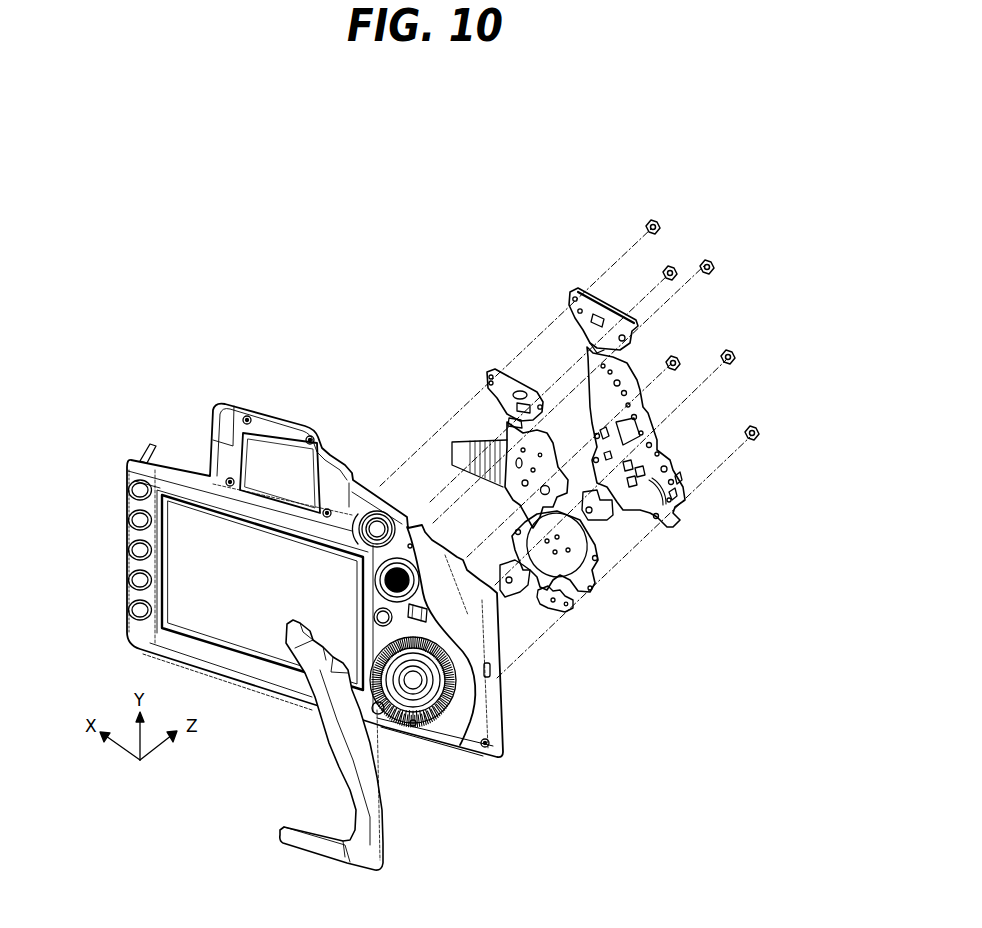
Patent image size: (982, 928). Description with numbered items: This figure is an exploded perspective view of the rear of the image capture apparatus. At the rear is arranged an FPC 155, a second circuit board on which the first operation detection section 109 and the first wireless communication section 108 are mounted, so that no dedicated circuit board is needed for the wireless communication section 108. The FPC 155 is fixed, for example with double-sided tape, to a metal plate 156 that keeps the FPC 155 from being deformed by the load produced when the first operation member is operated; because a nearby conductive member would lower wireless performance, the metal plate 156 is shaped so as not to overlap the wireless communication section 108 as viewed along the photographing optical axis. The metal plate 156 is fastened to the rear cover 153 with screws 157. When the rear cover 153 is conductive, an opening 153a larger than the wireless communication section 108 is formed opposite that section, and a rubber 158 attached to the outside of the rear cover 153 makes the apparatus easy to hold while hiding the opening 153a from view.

The first wireless communication section 108 is at (554, 608).
The first operation detection section 109 is at (582, 555).
The rear cover 153 is at (130, 458).
The opening 153a is at (427, 735).
The FPC 155 is at (496, 374).
The metal plate 156 is at (578, 291).
The screws 157 is at (671, 267).
The rubber 158 is at (366, 813).